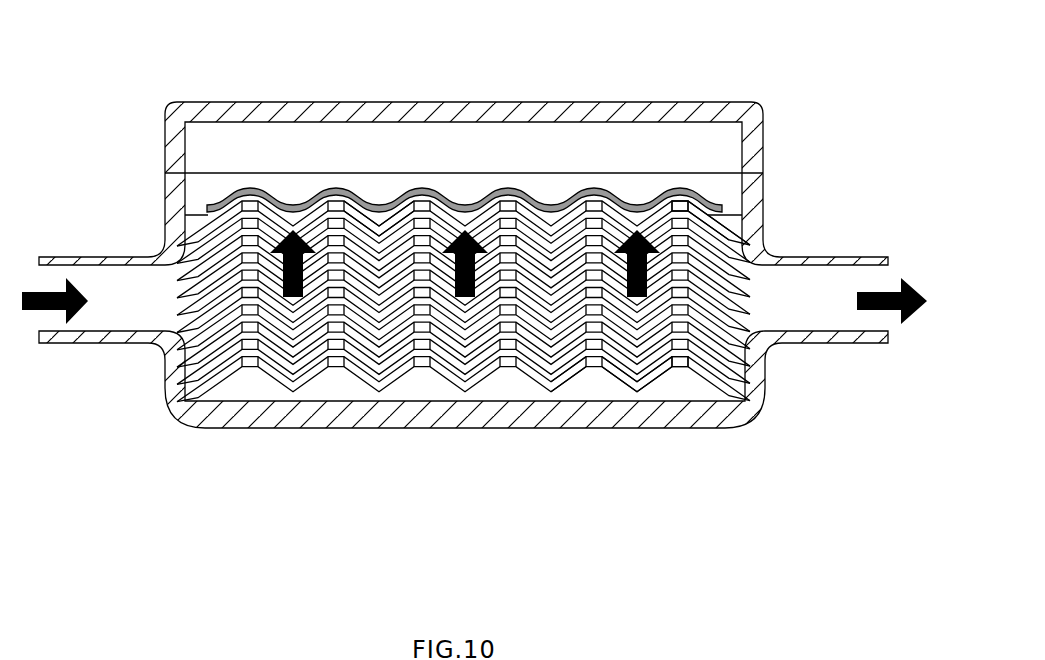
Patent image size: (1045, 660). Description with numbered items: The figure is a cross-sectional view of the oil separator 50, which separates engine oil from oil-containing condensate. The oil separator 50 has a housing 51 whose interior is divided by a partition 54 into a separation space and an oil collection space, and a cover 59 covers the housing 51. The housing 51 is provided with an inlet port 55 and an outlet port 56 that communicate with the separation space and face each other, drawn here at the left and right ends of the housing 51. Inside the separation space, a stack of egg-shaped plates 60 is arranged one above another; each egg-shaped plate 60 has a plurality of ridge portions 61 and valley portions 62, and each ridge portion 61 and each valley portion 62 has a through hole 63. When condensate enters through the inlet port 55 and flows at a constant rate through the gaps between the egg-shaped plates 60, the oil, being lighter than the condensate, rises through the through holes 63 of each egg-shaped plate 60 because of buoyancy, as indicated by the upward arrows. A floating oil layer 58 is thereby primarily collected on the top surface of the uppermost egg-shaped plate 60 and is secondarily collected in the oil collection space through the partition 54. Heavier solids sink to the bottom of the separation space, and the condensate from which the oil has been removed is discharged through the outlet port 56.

The oil separator 50 is at (101, 39).
The housing 51 is at (365, 418).
The partition 54 is at (194, 217).
The inlet port 55 is at (101, 338).
The outlet port 56 is at (830, 337).
The floating oil layer 58 is at (500, 194).
The cover 59 is at (320, 110).
The egg-shaped plate 60 is at (738, 231).
The ridge portion 61 is at (697, 213).
The valley portion 62 is at (378, 222).
The through hole 63 is at (677, 207).